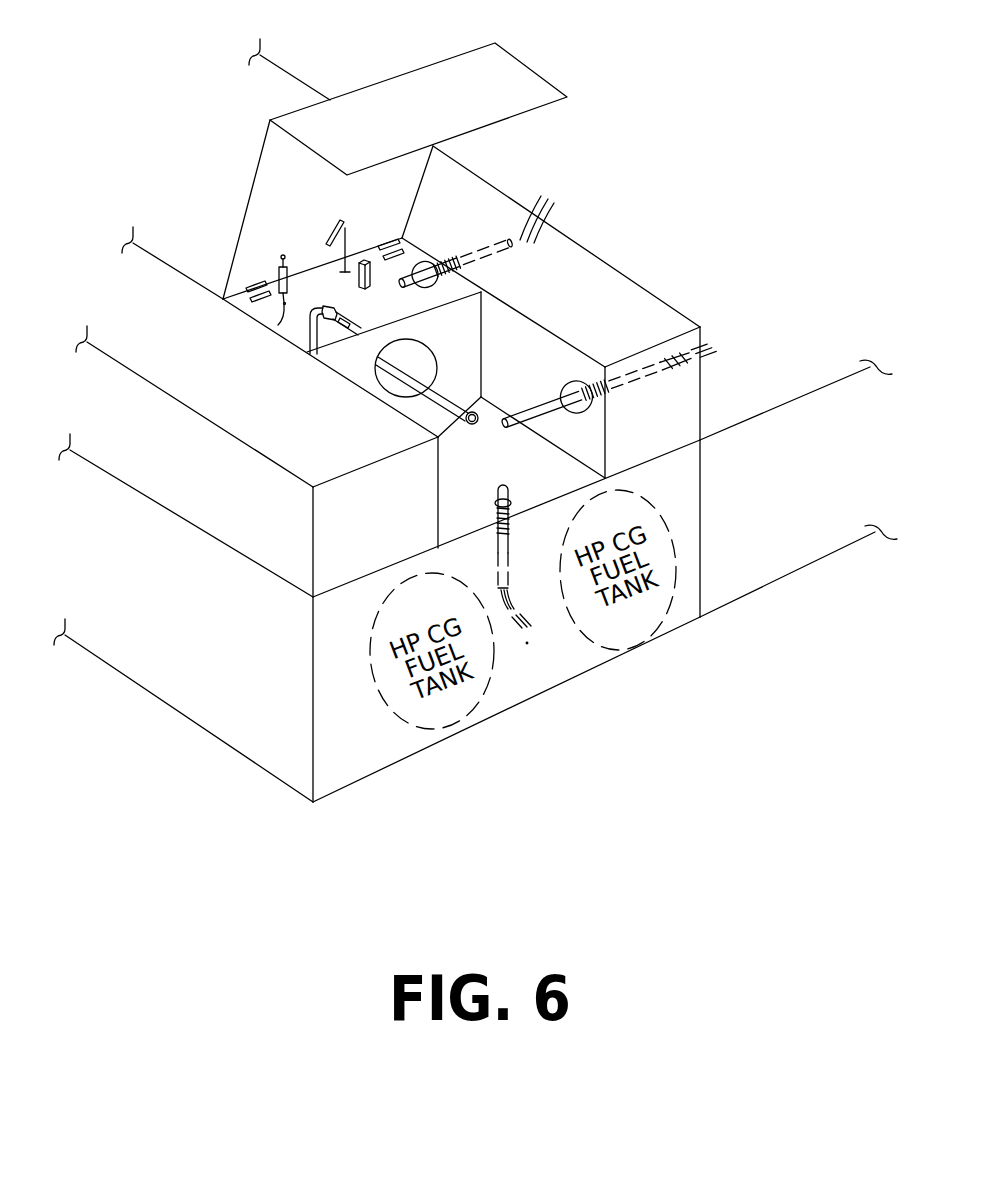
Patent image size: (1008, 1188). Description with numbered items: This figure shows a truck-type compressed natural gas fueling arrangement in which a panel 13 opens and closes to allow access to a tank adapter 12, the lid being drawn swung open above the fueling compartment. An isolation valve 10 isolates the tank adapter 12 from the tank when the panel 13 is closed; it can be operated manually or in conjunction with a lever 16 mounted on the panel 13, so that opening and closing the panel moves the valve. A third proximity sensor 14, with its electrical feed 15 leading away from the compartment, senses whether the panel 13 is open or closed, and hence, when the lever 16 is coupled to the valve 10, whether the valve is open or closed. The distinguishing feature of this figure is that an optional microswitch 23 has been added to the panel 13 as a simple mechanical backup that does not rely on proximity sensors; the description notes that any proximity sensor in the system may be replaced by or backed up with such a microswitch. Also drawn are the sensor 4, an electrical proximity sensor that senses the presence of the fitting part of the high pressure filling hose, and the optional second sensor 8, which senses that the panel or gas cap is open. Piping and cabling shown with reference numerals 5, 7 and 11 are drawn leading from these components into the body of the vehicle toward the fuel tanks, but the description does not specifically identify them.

The sensor 4 is at (533, 418).
The fuel line 5 is at (708, 338).
The electrical cable 7 is at (518, 621).
The second sensor 8 is at (511, 485).
The isolation valve 10 is at (336, 333).
The riser pipe 11 is at (308, 327).
The tank adapter 12 is at (474, 410).
The panel 13 is at (413, 97).
The third proximity sensor 14 is at (420, 268).
The electrical feed 15 is at (552, 220).
The lever 16 is at (342, 255).
The microswitch 23 is at (288, 278).